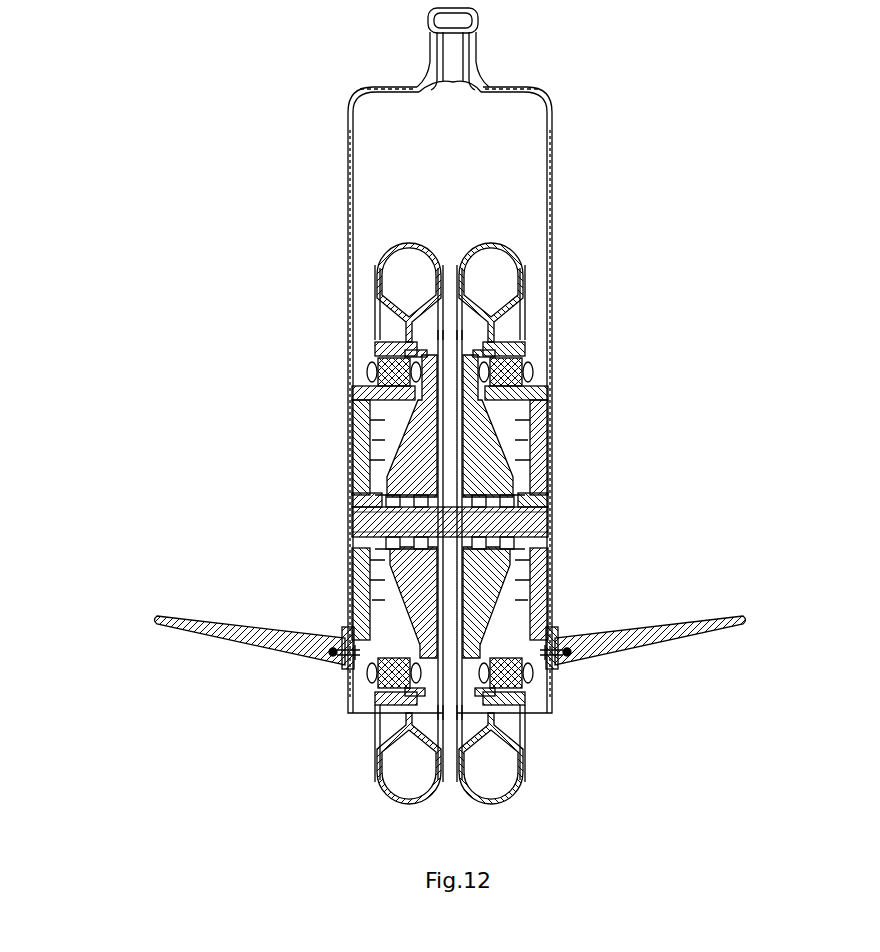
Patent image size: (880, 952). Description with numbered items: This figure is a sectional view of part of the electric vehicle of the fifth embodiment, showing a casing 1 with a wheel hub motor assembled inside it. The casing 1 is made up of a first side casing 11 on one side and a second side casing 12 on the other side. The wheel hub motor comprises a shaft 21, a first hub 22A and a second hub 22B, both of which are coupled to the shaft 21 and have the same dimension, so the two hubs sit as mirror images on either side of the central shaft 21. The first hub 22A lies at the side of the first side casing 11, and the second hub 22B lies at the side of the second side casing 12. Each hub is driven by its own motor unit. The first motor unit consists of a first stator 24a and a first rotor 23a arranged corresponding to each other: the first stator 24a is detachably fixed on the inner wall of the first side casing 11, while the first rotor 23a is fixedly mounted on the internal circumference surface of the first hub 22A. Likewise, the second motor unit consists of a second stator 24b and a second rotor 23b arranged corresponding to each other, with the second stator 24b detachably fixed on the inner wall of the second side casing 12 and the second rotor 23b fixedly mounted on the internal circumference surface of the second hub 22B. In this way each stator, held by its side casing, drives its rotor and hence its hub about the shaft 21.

The casing 1 is at (463, 360).
The first side casing 11 is at (552, 175).
The second side casing 12 is at (350, 170).
The shaft 21 is at (545, 521).
The first hub 22A is at (488, 445).
The second hub 22B is at (415, 450).
The first rotor 23a is at (527, 343).
The second rotor 23b is at (380, 343).
The first stator 24a is at (527, 370).
The second stator 24b is at (372, 372).